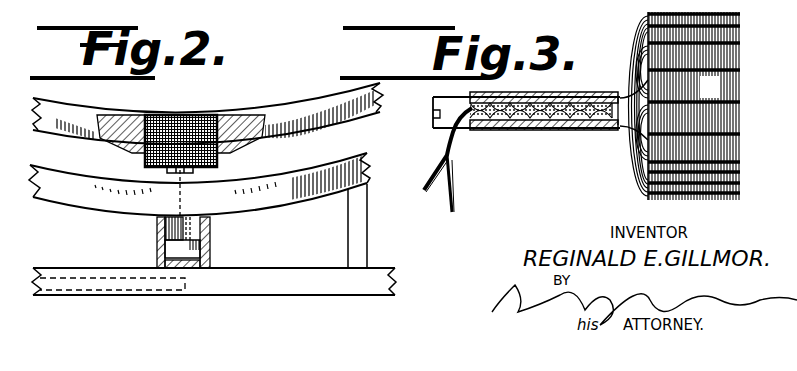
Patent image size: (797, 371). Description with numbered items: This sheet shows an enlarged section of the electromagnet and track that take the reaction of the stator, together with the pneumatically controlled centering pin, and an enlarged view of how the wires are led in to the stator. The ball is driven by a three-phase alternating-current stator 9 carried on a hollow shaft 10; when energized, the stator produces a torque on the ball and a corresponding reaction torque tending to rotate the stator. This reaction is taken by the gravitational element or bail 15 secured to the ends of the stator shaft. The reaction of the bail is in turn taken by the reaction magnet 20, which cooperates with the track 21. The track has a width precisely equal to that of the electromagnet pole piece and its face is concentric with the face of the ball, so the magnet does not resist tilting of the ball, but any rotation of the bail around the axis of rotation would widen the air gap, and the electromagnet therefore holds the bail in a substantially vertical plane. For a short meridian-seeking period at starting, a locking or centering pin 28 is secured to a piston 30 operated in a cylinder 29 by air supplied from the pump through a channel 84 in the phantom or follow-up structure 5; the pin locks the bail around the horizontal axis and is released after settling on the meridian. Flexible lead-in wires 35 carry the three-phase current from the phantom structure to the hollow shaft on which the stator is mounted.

In FIG. 2, the phantom or follow-up structure 5 is at (270, 285).
In FIG. 3, the stator 9 is at (680, 106).
In FIG. 3, the shaft 10 is at (548, 131).
In FIG. 2, the bail 15 is at (298, 105).
In FIG. 2, the reaction magnet 20 is at (178, 118).
In FIG. 2, the track 21 is at (292, 180).
In FIG. 2, the locking or centering pin 28 is at (186, 195).
In FIG. 2, the cylinder 29 is at (156, 236).
In FIG. 2, the piston 30 is at (210, 250).
In FIG. 3, the flexible lead-in wires 35 is at (458, 145).
In FIG. 2, the channel 84 is at (122, 285).